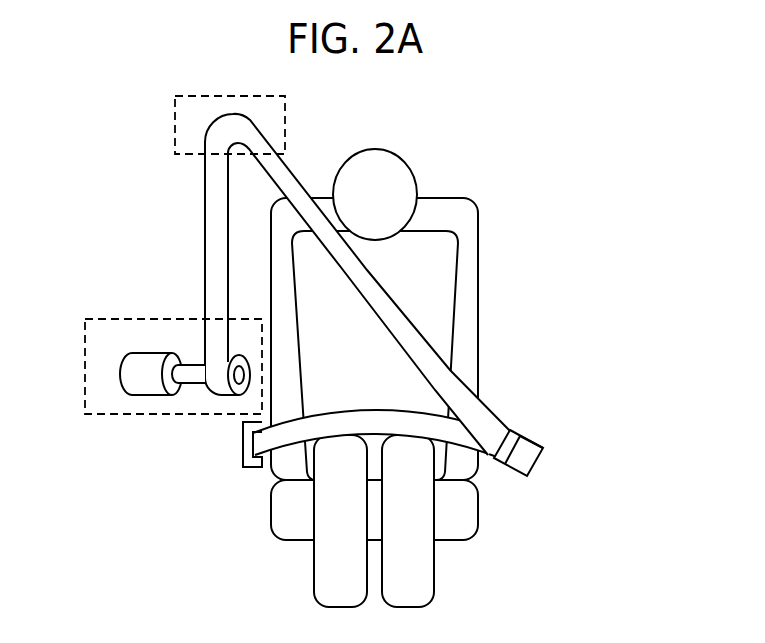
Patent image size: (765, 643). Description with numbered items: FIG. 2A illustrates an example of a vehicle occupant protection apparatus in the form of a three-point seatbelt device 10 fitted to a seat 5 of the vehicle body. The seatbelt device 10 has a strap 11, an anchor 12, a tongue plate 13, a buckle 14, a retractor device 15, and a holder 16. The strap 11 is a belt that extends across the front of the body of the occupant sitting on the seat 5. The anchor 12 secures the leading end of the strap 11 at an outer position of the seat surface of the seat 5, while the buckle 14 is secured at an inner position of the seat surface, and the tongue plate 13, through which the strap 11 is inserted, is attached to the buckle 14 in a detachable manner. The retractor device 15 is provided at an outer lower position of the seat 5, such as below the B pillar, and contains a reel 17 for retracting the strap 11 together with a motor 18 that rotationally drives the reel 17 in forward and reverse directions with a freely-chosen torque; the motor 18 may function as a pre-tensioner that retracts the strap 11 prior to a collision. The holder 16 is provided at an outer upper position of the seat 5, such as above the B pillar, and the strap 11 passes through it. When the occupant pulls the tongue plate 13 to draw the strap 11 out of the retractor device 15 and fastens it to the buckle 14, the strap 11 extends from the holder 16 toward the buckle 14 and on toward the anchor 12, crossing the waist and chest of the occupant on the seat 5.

The seatbelt device 10 is at (547, 130).
The seat 5 is at (480, 217).
The strap 11 is at (413, 355).
The anchor 12 is at (250, 450).
The tongue plate 13 is at (510, 432).
The buckle 14 is at (527, 457).
The retractor device 15 is at (117, 319).
The holder 16 is at (175, 132).
The reel 17 is at (233, 392).
The motor 18 is at (147, 382).